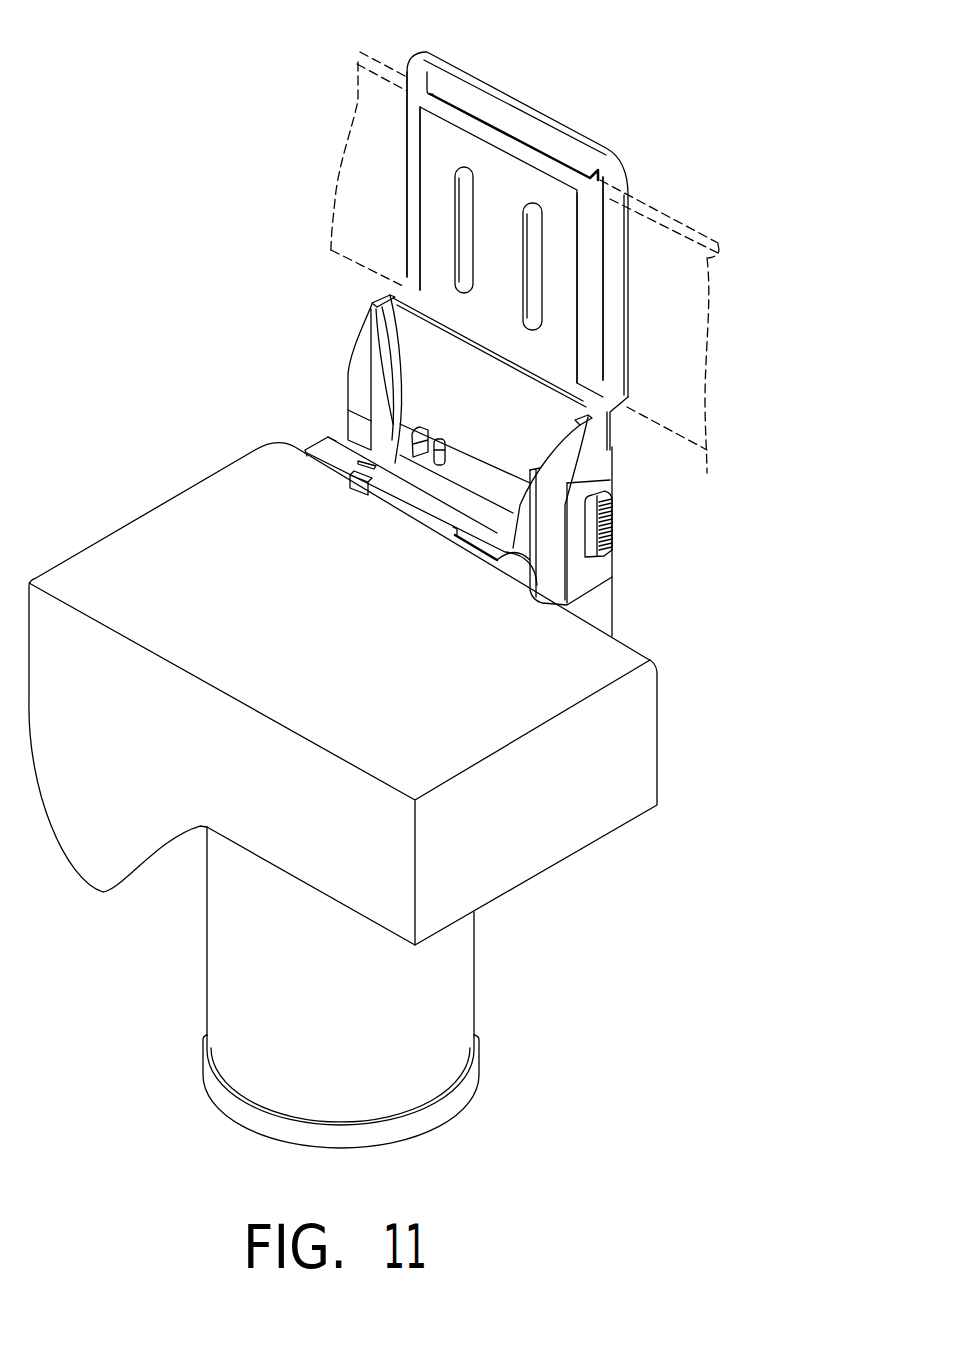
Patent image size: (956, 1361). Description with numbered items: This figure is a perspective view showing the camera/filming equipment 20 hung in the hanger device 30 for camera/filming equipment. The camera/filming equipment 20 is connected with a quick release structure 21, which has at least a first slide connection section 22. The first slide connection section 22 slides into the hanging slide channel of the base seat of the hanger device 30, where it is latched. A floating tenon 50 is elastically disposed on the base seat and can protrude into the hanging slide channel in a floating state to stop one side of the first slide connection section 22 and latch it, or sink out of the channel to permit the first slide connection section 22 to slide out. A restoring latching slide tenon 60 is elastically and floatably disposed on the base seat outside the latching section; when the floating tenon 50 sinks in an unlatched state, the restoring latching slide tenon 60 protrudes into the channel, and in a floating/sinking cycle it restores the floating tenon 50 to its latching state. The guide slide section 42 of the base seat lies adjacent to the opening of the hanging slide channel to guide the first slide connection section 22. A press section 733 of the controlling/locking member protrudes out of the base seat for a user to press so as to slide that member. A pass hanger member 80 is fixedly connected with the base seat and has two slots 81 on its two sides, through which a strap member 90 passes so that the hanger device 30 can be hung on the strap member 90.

The camera/filming equipment 20 is at (477, 978).
The quick release structure 21 is at (303, 452).
The first slide connection section 22 is at (350, 427).
The hanger device 30 is at (186, 211).
The guide slide section 42 is at (427, 360).
The floating tenon 50 is at (346, 419).
The restoring latching slide tenon 60 is at (443, 433).
The pass hanger member 80 is at (521, 100).
The slot 81 is at (418, 210).
The strap member 90 is at (341, 148).
The press section 733 is at (613, 515).